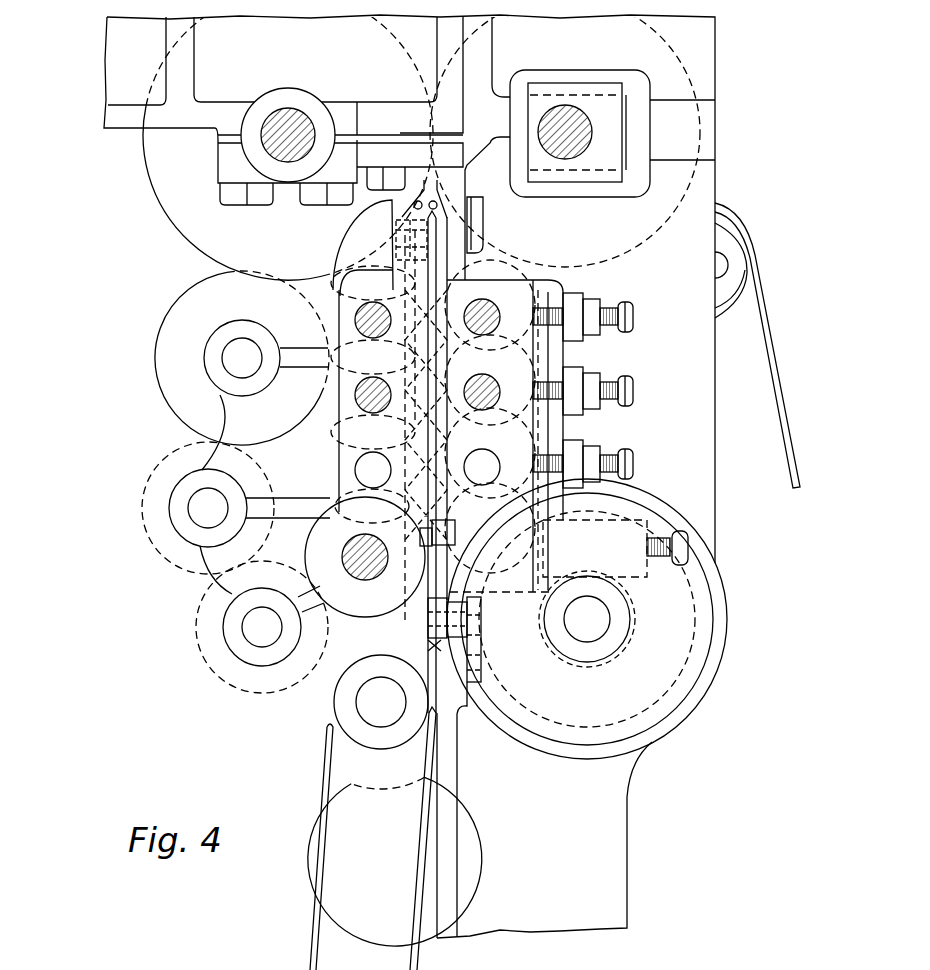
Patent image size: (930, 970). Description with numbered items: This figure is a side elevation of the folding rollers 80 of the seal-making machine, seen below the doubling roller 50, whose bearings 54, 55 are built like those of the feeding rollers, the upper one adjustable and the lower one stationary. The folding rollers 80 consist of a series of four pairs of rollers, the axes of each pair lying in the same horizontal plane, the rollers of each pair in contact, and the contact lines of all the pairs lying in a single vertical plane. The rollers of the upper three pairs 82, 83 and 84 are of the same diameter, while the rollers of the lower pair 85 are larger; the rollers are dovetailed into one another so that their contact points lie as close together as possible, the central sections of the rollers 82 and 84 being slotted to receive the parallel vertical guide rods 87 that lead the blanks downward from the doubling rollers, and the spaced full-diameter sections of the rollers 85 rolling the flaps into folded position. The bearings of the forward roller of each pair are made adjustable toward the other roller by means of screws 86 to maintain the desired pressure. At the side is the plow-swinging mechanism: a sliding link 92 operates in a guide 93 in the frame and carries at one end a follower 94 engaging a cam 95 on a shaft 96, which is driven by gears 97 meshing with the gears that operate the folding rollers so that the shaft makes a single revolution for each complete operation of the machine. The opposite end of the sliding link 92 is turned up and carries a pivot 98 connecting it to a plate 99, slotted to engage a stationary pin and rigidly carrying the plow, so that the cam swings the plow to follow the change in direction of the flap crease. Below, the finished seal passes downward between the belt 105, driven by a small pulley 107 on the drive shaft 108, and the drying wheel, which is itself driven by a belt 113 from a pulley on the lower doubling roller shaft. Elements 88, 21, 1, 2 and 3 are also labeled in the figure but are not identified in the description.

The doubling roller 50 is at (178, 227).
The bearing 54 is at (313, 104).
The bearing 55 is at (688, 62).
The folding rollers 80 is at (337, 250).
The rollers of the first pair 82 is at (383, 265).
The rollers of the second pair 83 is at (384, 338).
The rollers of the third pair 84 is at (384, 414).
The rollers of the lower pair 85 is at (491, 488).
The screws 86 is at (633, 315).
The guide rods 87 is at (474, 246).
The rack slide 88 is at (385, 250).
The sliding link 92 is at (434, 646).
The guide 93 is at (437, 533).
The follower 94 is at (482, 630).
The cam 95 is at (702, 648).
The shaft 96 is at (609, 626).
The gears 97 is at (226, 682).
The pivot 98 is at (385, 562).
The plate 99 is at (372, 506).
The shaft 21 is at (482, 467).
The gear position 1 is at (505, 311).
The gear position 2 is at (505, 385).
The gear position 3 is at (509, 460).
The belt 105 is at (423, 803).
The small pulley 107 is at (321, 758).
The drive shaft 108 is at (356, 718).
The belt 113 is at (780, 390).